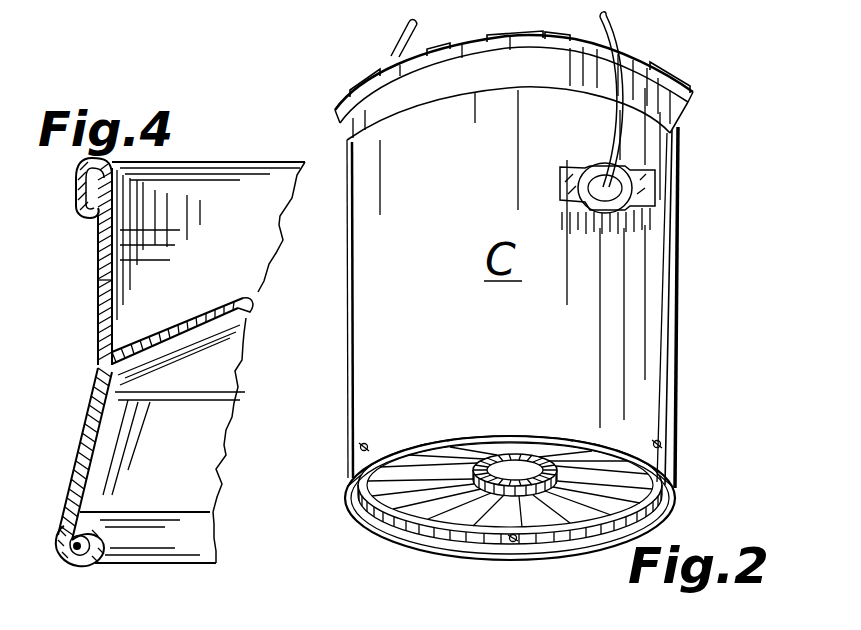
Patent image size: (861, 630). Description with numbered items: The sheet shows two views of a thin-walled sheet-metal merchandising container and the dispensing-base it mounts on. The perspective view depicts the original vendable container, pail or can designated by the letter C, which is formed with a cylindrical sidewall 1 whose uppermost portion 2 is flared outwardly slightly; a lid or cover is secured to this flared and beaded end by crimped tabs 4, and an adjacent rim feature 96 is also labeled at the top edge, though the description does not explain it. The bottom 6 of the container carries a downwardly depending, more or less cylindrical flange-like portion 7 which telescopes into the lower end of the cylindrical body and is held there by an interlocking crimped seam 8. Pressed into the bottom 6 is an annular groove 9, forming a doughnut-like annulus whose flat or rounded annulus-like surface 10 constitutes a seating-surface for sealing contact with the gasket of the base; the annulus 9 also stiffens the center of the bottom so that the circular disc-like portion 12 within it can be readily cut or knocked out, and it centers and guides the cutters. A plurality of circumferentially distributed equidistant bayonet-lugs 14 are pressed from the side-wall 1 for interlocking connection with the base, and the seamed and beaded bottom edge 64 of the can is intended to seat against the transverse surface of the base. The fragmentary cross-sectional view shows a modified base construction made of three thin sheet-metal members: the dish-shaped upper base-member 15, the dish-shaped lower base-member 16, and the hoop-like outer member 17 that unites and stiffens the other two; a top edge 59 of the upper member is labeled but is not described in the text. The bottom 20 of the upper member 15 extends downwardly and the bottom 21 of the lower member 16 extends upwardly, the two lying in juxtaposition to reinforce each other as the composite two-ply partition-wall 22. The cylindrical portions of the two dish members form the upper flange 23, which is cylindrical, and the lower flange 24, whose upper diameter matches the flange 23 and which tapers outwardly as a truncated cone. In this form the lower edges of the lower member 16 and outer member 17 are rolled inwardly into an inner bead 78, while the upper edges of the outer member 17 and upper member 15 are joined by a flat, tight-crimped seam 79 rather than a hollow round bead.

In FIG. 2, the cylindrical sidewall 1 is at (667, 282).
In FIG. 2, the uppermost portion 2 is at (381, 98).
In FIG. 2, the crimped tabs 4 is at (358, 86).
In FIG. 2, the rim tab slot 96 is at (404, 62).
In FIG. 2, the bottom 6 is at (418, 510).
In FIG. 2, the flange-like portion 7 is at (627, 520).
In FIG. 2, the interlocking crimped seam 8 is at (678, 504).
In FIG. 2, the annular groove 9 is at (508, 458).
In FIG. 2, the annulus-like surface 10 is at (500, 442).
In FIG. 2, the circular disc-like portion 12 is at (577, 492).
In FIG. 2, the bayonet-lugs 14 is at (363, 447).
In FIG. 2, the seamed and beaded bottom edge 64 is at (356, 519).
In FIG. 4, the top edge 59 is at (233, 160).
In FIG. 2, the top edge 59 is at (343, 617).
In FIG. 4, the upper base-member 15 is at (254, 241).
In FIG. 4, the lower base-member 16 is at (224, 430).
In FIG. 4, the outer hoop-like member 17 is at (46, 535).
In FIG. 4, the bottom of the upper member 20 is at (232, 306).
In FIG. 4, the bottom of the lower member 21 is at (234, 336).
In FIG. 4, the two-ply partition-wall 22 is at (248, 306).
In FIG. 4, the upper flange 23 is at (112, 282).
In FIG. 4, the lower flange 24 is at (92, 452).
In FIG. 4, the inner bead 78 is at (177, 543).
In FIG. 4, the flat tight-crimped seam 79 is at (76, 194).